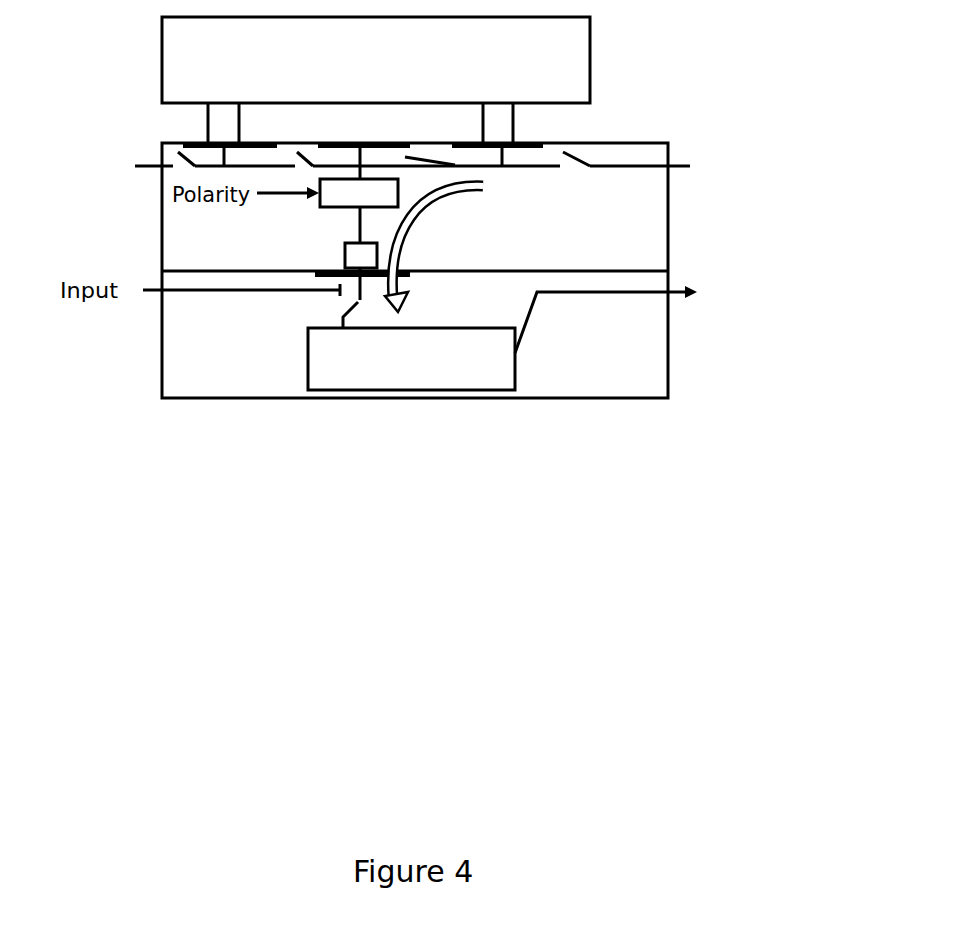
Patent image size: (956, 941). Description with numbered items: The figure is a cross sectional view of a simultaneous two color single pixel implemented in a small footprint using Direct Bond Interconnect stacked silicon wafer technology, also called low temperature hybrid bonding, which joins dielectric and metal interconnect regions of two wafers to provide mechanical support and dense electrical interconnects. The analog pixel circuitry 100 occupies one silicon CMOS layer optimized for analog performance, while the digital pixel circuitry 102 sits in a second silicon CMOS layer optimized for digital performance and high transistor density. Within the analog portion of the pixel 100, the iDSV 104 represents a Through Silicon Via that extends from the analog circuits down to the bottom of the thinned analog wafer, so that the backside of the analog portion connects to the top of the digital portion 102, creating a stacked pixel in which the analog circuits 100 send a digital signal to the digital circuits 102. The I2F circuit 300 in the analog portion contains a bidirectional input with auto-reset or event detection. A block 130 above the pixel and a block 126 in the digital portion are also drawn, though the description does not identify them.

The photodetector / sensor array 130 is at (409, 80).
The analog pixel circuitry 100 is at (705, 135).
The digital pixel circuitry 102 is at (705, 268).
The iDSV 104 is at (345, 245).
The digital counter / memory 126 is at (411, 359).
The I2F circuit 300 is at (359, 177).